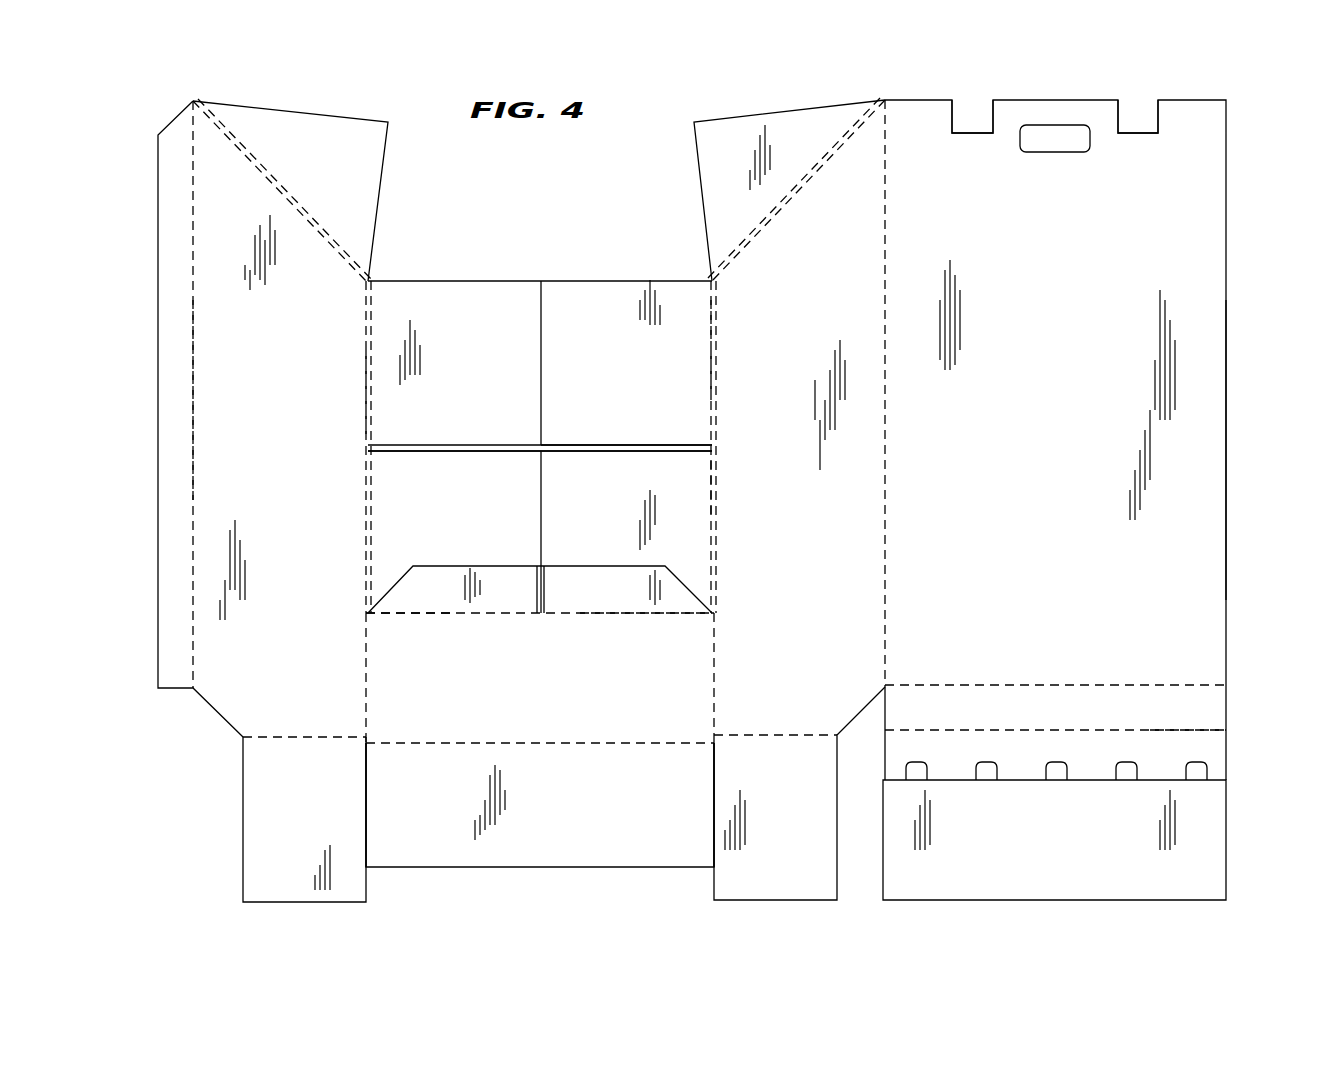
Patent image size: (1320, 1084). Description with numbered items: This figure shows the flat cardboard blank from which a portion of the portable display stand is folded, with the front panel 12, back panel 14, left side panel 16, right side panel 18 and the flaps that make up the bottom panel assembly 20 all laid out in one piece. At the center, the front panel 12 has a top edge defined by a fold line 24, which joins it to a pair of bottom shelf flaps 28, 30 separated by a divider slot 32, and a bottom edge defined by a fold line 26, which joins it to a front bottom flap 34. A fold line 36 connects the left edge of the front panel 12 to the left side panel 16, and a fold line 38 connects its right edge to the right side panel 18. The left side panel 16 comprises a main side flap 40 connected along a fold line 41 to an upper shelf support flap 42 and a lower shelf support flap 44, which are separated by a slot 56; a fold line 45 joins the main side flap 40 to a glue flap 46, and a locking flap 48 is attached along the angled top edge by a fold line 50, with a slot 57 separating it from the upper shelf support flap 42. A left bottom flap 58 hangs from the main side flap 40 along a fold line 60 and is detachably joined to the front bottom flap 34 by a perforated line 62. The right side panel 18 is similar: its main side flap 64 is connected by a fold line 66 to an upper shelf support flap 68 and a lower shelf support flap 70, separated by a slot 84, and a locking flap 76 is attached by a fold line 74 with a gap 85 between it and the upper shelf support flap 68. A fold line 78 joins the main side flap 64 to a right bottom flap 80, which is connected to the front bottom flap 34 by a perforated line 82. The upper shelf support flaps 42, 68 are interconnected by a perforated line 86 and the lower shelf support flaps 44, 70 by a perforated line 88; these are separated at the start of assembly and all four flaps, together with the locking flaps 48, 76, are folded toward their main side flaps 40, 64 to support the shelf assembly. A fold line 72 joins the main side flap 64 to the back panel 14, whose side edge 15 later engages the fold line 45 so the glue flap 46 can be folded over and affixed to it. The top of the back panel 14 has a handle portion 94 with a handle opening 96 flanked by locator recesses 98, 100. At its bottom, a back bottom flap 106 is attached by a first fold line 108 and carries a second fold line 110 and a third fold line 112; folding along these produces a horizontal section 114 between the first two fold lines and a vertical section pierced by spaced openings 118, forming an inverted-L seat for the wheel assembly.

The front panel 12 is at (540, 654).
The back panel 14 is at (1055, 440).
The side edge 15 is at (1226, 440).
The left side panel 16 is at (125, 630).
The right side panel 18 is at (910, 465).
The bottom panel assembly 20 is at (515, 892).
The fold line 24 is at (600, 614).
The fold line 26 is at (613, 743).
The bottom shelf flap 28 is at (420, 613).
The bottom shelf flap 30 is at (540, 589).
The divider slot 32 is at (538, 582).
The front bottom flap 34 is at (540, 805).
The fold line 36 is at (366, 683).
The fold line 38 is at (714, 652).
The main side flap 40 is at (244, 394).
The fold line 41 is at (366, 397).
The upper shelf support flap 42 is at (540, 322).
The lower shelf support flap 44 is at (540, 488).
The fold line 45 is at (193, 372).
The glue flap 46 is at (158, 337).
The locking flap 48 is at (372, 170).
The fold line 50 is at (293, 202).
The slot 56 is at (457, 445).
The slot 57 is at (370, 280).
The left bottom flap 58 is at (304, 819).
The fold line 60 is at (303, 737).
The perforated line 62 is at (366, 805).
The main side flap 64 is at (800, 530).
The fold line 66 is at (714, 378).
The upper shelf support flap 68 is at (685, 322).
The lower shelf support flap 70 is at (690, 490).
The fold line 72 is at (885, 545).
The fold line 74 is at (790, 198).
The locking flap 76 is at (718, 180).
The fold line 78 is at (793, 737).
The right bottom flap 80 is at (799, 793).
The perforated line 82 is at (714, 808).
The slot 84 is at (600, 445).
The gap 85 is at (712, 279).
The perforated line 86 is at (541, 362).
The perforated line 88 is at (541, 515).
The handle portion 94 is at (1005, 155).
The handle opening 96 is at (1068, 145).
The locator recess 98 is at (962, 133).
The locator recess 100 is at (1140, 133).
The back bottom flap 106 is at (1255, 802).
The first fold line 108 is at (1100, 685).
The second fold line 110 is at (1192, 730).
The third fold line 112 is at (948, 780).
The horizontal section 114 is at (972, 705).
The spaced openings 118 is at (1127, 780).